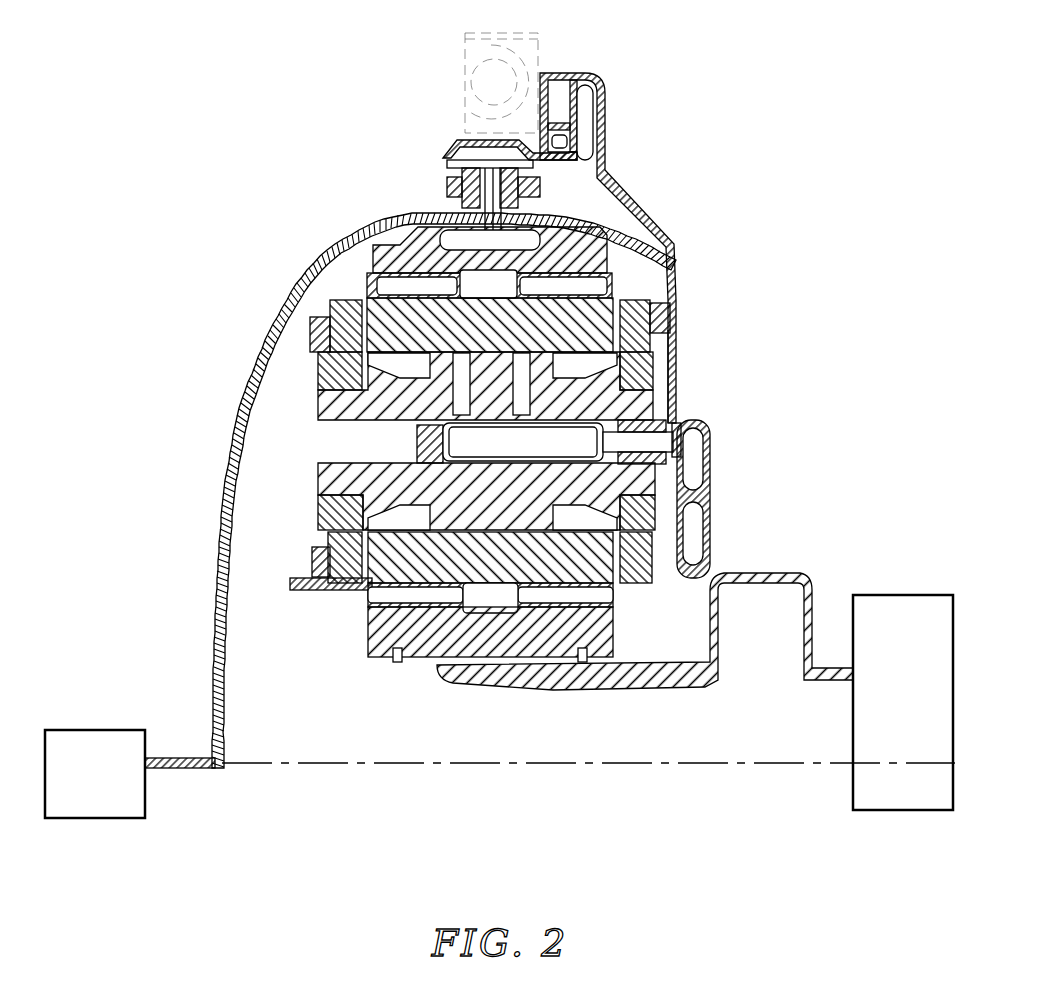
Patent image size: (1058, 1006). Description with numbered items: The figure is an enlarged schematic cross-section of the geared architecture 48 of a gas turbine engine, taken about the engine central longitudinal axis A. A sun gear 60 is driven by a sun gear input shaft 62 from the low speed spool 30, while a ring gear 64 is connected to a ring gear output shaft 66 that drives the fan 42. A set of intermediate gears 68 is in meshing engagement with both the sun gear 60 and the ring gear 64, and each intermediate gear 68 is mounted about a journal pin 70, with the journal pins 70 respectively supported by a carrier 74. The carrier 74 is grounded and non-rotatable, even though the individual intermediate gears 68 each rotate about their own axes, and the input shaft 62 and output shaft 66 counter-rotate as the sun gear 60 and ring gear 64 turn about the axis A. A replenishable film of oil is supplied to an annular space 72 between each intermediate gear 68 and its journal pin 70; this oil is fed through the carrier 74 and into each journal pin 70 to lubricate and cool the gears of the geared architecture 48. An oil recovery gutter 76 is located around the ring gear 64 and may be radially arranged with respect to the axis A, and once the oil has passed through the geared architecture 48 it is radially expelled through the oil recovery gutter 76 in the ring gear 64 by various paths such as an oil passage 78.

The low speed spool 30 is at (888, 663).
The fan 42 is at (80, 791).
The geared architecture 48 is at (750, 214).
The sun gear 60 is at (370, 640).
The sun gear input shaft 62 is at (667, 678).
The ring gear 64 is at (660, 278).
The ring gear output shaft 66 is at (328, 252).
The intermediate gears 68 is at (397, 582).
The journal pin 70 is at (323, 467).
The annular space 72 is at (318, 528).
The carrier 74 is at (664, 335).
The oil recovery gutter 76 is at (463, 138).
The oil passage 78 is at (518, 222).
The engine central longitudinal axis A is at (256, 770).